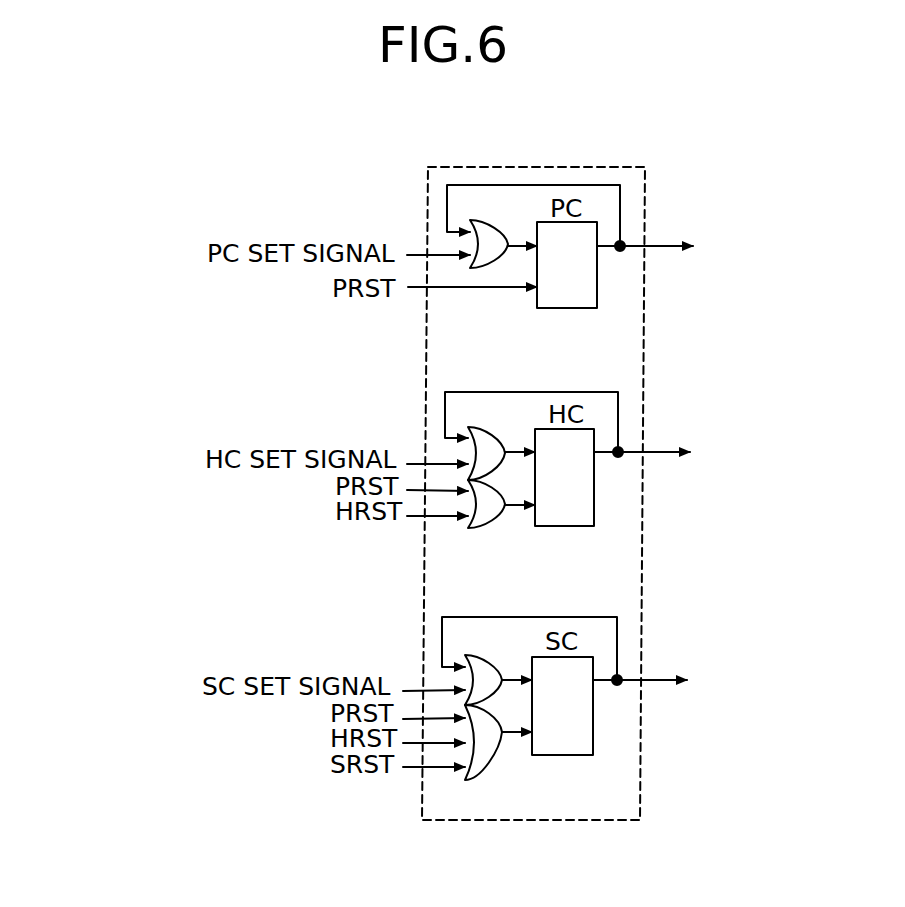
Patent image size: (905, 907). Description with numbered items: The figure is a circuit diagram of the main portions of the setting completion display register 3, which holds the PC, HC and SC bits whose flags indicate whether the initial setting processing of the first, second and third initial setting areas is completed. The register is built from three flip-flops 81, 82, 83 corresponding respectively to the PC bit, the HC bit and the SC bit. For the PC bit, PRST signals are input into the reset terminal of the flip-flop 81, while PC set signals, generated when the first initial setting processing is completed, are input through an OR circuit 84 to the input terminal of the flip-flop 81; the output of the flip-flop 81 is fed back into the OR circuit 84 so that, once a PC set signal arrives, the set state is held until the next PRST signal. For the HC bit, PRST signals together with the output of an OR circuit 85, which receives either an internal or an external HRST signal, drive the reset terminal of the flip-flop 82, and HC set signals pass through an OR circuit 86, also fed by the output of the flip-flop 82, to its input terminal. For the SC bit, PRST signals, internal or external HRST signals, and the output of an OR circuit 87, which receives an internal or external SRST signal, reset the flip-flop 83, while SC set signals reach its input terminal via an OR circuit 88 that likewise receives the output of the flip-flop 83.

The setting completion display register 3 is at (622, 167).
The flip-flop 81 is at (568, 308).
The flip-flop 82 is at (577, 526).
The flip-flop 83 is at (575, 755).
The OR circuit 84 is at (498, 230).
The OR circuit 85 is at (490, 528).
The OR circuit 86 is at (495, 437).
The OR circuit 87 is at (480, 780).
The OR circuit 88 is at (492, 664).